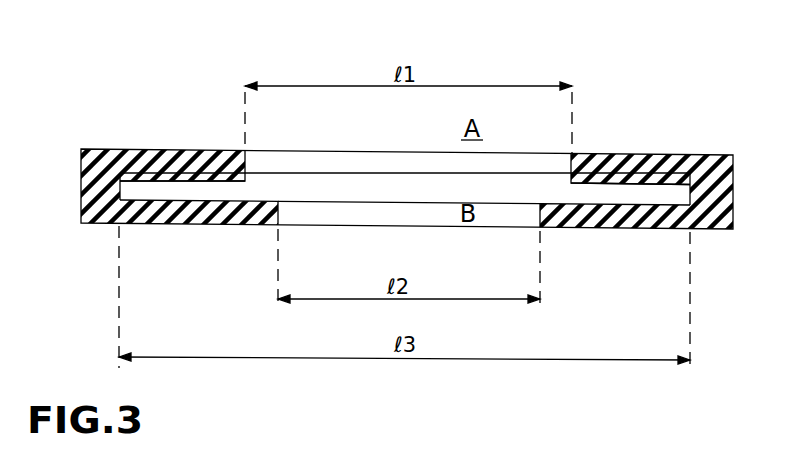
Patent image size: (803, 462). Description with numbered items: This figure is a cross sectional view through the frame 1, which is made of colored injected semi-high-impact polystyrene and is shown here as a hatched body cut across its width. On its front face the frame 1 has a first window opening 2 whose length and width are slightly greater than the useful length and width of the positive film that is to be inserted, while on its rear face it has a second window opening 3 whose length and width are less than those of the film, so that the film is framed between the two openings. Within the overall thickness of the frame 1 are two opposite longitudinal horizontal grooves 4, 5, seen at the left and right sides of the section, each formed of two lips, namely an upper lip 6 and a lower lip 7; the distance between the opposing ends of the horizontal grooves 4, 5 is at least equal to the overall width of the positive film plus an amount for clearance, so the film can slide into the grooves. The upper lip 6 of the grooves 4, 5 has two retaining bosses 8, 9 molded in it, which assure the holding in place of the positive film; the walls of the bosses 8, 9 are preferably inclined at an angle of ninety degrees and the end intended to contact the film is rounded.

The frame 1 is at (401, 171).
The first window opening 2 is at (377, 163).
The second window opening 3 is at (349, 213).
The longitudinal horizontal groove 4 is at (657, 193).
The longitudinal horizontal groove 5 is at (120, 203).
The upper lip 6 is at (145, 160).
The lower lip 7 is at (165, 210).
The retaining boss 8 is at (651, 176).
The retaining boss 9 is at (206, 172).